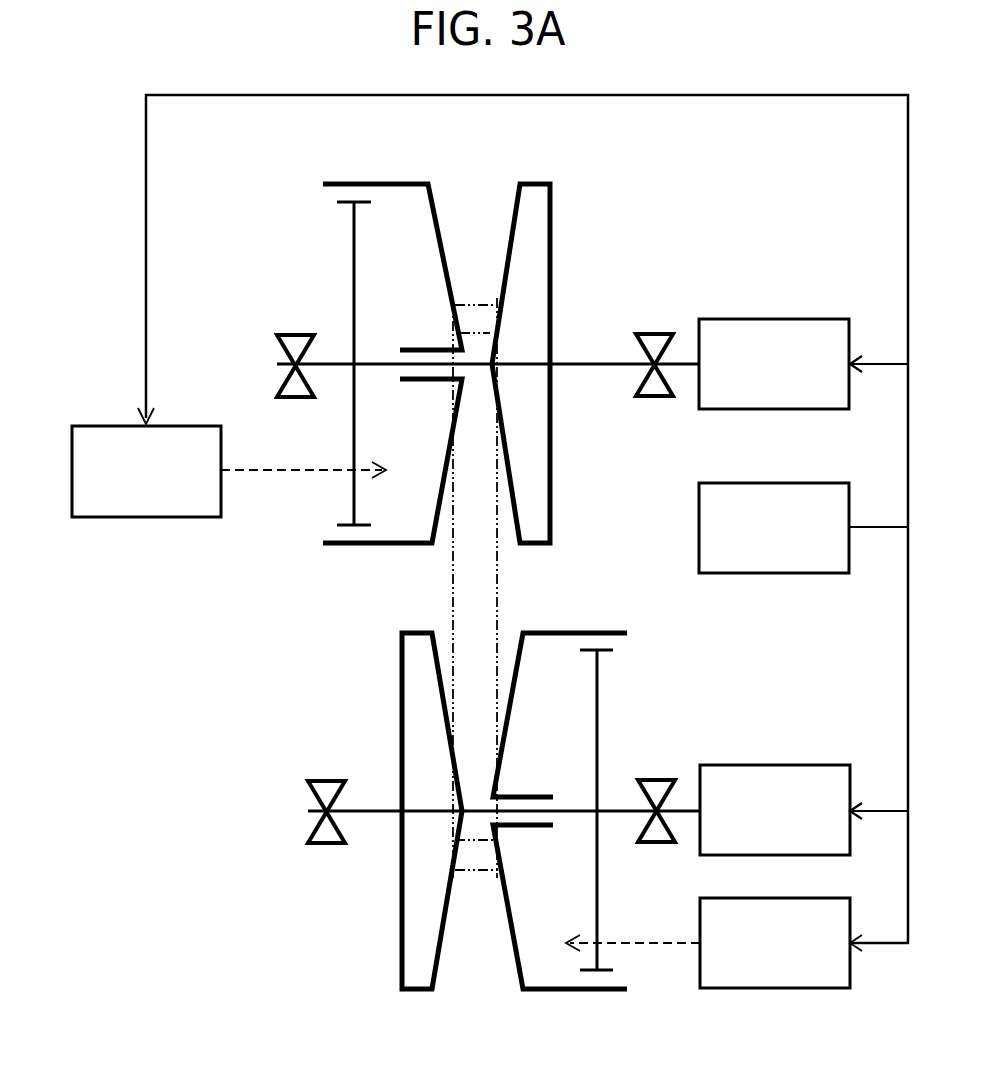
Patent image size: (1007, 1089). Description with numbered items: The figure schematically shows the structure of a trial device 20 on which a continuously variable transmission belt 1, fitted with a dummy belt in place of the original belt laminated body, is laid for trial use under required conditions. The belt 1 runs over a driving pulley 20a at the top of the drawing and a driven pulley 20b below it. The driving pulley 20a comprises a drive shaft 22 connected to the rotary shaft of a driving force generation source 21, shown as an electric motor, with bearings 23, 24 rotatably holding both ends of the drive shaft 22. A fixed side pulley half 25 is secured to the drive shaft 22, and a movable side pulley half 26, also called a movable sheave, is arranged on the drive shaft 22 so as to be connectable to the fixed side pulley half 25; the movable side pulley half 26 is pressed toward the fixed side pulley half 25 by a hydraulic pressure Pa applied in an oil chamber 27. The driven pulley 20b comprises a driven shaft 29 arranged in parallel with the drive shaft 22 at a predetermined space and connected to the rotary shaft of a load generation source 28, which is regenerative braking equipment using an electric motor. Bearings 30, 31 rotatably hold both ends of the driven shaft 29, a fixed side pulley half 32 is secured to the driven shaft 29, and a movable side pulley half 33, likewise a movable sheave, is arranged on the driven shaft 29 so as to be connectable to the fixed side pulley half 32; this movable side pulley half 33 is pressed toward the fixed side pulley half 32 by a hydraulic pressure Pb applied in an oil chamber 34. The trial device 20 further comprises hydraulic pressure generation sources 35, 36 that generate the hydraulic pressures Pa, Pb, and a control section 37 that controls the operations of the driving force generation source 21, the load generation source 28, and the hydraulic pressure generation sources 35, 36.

The continuously variable transmission belt 1 is at (446, 590).
The trial device 20 is at (439, 855).
The driving pulley 20a is at (473, 228).
The driven pulley 20b is at (470, 963).
The driving force generation source 21 is at (773, 318).
The drive shaft 22 is at (577, 360).
The bearing 23 is at (652, 332).
The bearing 24 is at (298, 333).
The fixed side pulley half 25 is at (551, 237).
The movable side pulley half 26 is at (443, 226).
The oil chamber 27 is at (386, 438).
The load generation source 28 is at (773, 765).
The driven shaft 29 is at (366, 808).
The bearing 30 is at (331, 780).
The bearing 31 is at (652, 778).
The fixed side pulley half 32 is at (402, 908).
The movable side pulley half 33 is at (518, 972).
The oil chamber 34 is at (538, 909).
The hydraulic pressure generation source 35 is at (147, 517).
The hydraulic pressure generation source 36 is at (773, 988).
The control section 37 is at (773, 483).
The hydraulic pressure Pa is at (297, 472).
The hydraulic pressure Pb is at (660, 945).